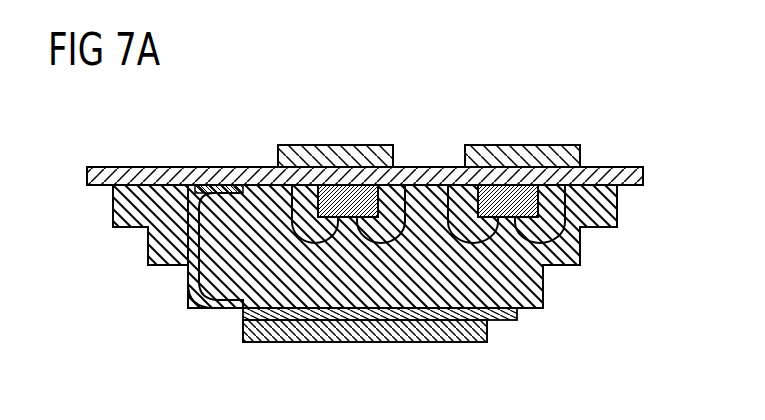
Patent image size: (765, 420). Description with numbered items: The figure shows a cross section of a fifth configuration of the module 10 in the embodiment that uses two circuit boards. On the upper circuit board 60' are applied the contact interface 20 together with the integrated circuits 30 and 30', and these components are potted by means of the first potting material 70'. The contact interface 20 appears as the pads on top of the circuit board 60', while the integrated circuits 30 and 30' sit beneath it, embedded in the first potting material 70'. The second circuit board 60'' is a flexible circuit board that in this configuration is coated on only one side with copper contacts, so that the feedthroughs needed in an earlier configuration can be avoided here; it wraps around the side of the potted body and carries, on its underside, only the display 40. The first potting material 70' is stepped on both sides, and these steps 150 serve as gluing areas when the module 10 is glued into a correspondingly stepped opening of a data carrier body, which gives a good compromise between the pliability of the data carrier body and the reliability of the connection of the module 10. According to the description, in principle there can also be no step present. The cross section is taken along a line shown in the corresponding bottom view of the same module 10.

The module 10 is at (363, 224).
The contact interface 20 is at (463, 158).
The integrated circuit 30 is at (349, 161).
The integrated circuit 30' is at (509, 161).
The display 40 is at (355, 343).
The circuit board 60' is at (365, 146).
The flexible circuit board 60'' is at (352, 280).
The first potting material 70' is at (330, 251).
The step 150 is at (170, 266).